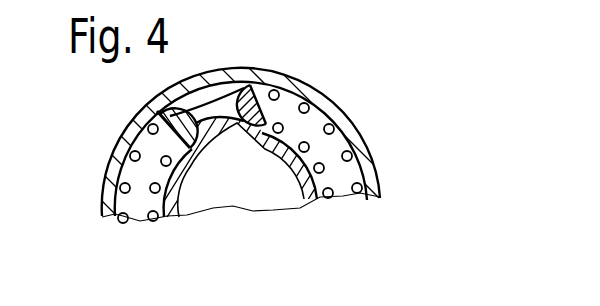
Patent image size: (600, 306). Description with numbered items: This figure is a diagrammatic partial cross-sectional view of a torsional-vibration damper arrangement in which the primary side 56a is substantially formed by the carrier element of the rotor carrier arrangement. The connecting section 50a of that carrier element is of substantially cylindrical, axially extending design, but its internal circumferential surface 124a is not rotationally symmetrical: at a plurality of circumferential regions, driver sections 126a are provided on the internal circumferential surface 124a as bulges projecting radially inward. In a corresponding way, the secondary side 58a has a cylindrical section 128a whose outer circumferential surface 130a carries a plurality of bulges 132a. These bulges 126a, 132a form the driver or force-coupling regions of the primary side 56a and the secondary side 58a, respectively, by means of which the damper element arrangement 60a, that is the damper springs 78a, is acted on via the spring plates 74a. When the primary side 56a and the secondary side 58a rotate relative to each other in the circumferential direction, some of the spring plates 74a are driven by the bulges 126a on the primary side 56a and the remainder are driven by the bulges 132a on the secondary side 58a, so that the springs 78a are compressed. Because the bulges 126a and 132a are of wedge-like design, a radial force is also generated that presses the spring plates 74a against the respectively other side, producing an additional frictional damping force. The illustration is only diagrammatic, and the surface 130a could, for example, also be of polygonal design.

The primary side 56a is at (367, 107).
The connecting section 50a is at (288, 80).
The damper springs 78a is at (111, 215).
The internal circumferential surface 124a is at (150, 124).
The damper element arrangement 60a is at (117, 186).
The outer circumferential surface 130a is at (305, 182).
The cylindrical section 128a is at (258, 148).
The secondary side 58a is at (240, 190).
The bulges 132a is at (212, 133).
The driver sections 126a is at (230, 80).
The spring plates 74a is at (165, 110).